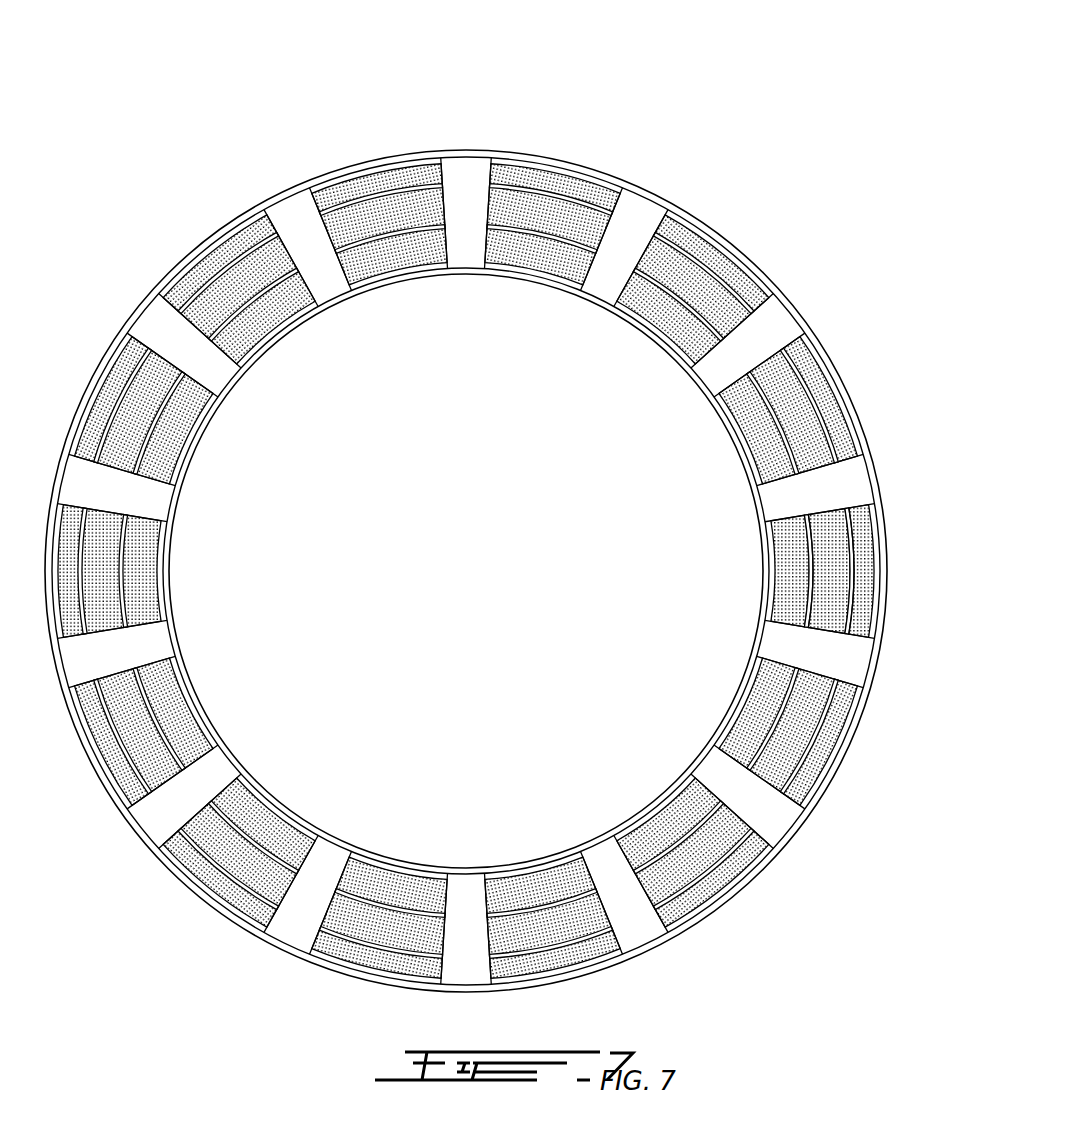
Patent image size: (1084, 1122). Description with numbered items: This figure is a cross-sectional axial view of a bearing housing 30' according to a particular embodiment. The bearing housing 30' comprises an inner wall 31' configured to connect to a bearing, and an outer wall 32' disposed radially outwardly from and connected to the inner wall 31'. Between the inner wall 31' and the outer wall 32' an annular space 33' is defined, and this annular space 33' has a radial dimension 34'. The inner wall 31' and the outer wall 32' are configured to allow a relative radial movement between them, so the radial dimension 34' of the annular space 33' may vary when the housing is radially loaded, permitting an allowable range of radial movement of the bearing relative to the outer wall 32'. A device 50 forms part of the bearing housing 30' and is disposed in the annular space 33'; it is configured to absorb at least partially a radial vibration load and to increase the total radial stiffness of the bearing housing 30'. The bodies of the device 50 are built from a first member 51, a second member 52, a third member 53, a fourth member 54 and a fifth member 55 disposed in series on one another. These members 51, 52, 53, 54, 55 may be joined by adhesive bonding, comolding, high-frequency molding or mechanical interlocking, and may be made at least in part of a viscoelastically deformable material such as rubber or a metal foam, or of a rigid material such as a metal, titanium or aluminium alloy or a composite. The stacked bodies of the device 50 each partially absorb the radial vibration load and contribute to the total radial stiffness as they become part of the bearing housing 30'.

The bearing housing 30' is at (412, 446).
The inner wall 31' is at (305, 204).
The outer wall 32' is at (466, 517).
The annular space 33' is at (634, 196).
The radial dimension 34' is at (767, 310).
The device 50 is at (858, 352).
The first member 51 is at (863, 518).
The second member 52 is at (852, 545).
The third member 53 is at (835, 565).
The fourth member 54 is at (812, 587).
The fifth member 55 is at (792, 605).